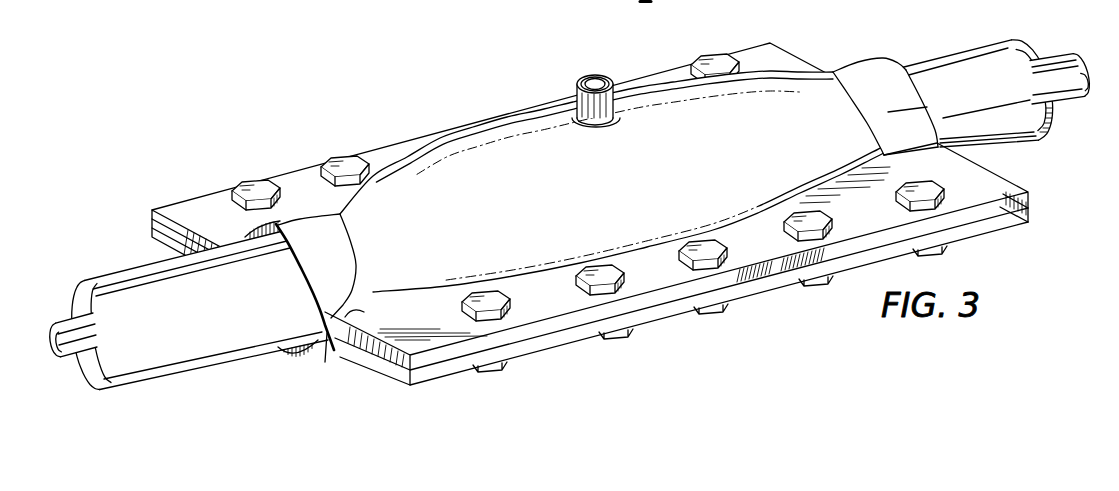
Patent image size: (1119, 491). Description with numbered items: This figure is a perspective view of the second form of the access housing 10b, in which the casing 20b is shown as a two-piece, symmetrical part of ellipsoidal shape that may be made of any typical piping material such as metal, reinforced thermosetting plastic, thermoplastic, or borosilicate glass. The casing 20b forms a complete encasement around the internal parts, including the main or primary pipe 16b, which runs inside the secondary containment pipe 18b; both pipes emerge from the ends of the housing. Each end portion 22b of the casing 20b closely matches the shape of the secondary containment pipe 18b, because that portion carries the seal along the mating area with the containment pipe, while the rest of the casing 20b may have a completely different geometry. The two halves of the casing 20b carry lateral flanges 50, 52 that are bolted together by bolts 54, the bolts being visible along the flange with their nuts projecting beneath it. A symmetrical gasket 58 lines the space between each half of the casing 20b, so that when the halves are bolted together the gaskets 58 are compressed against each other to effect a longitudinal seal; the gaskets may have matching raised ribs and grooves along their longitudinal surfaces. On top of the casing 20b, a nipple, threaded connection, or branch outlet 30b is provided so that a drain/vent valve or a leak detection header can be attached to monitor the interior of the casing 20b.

The access housing 10b is at (569, 206).
The primary pipe 16b is at (72, 348).
The secondary containment pipe 18b is at (217, 342).
The casing 20b is at (471, 155).
The end portion of casing 22b is at (297, 224).
The branch outlet 30b is at (577, 101).
The lateral flange 50 is at (180, 208).
The lateral flange 52 is at (373, 362).
The bolts 54 is at (704, 316).
The symmetrical gasket 58 is at (152, 218).